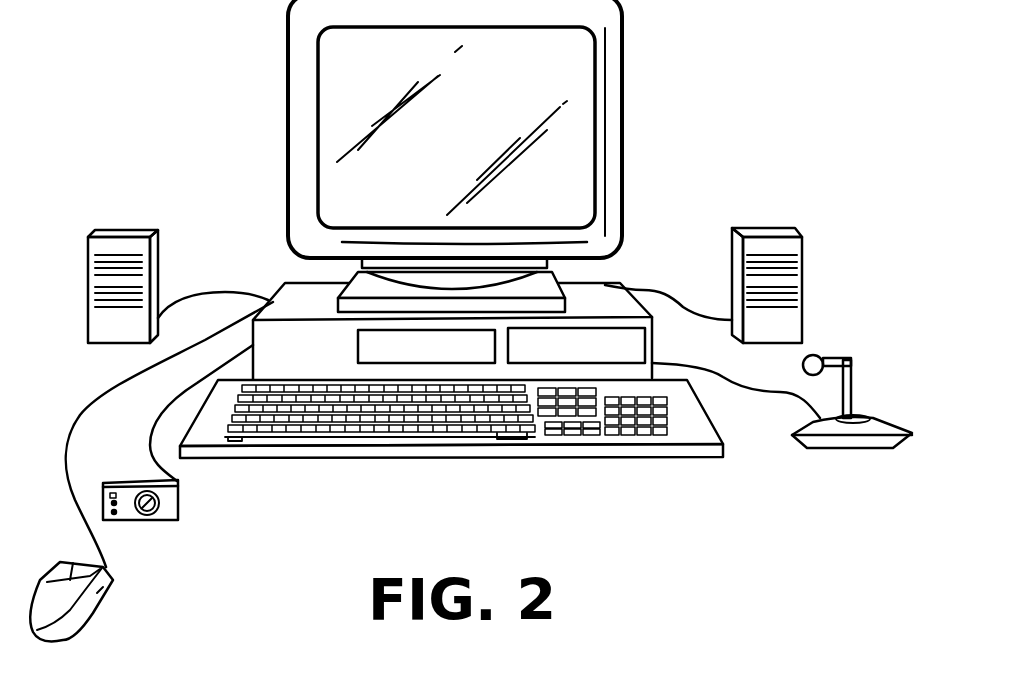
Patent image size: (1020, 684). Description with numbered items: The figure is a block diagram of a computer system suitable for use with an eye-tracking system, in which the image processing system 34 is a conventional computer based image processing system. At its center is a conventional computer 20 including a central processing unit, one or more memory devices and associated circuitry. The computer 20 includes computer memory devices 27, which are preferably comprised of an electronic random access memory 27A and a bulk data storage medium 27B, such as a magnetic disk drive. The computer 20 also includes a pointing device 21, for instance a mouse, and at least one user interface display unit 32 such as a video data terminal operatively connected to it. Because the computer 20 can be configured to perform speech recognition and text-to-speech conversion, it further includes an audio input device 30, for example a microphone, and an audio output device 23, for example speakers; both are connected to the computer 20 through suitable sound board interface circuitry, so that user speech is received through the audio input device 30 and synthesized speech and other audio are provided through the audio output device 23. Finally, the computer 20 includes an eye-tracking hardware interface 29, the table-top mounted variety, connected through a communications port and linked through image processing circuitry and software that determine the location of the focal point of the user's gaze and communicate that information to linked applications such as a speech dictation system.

The computer 20 is at (218, 127).
The pointing device 21 is at (97, 613).
The audio output device 23 is at (118, 230).
The computer memory devices 27 is at (501, 424).
The electronic random access memory 27A is at (358, 335).
The bulk data storage medium 27B is at (645, 340).
The eye-tracking hardware interface 29 is at (148, 522).
The audio input device 30 is at (828, 452).
The user interface display unit 32 is at (625, 22).
The image processing system 34 is at (489, 349).